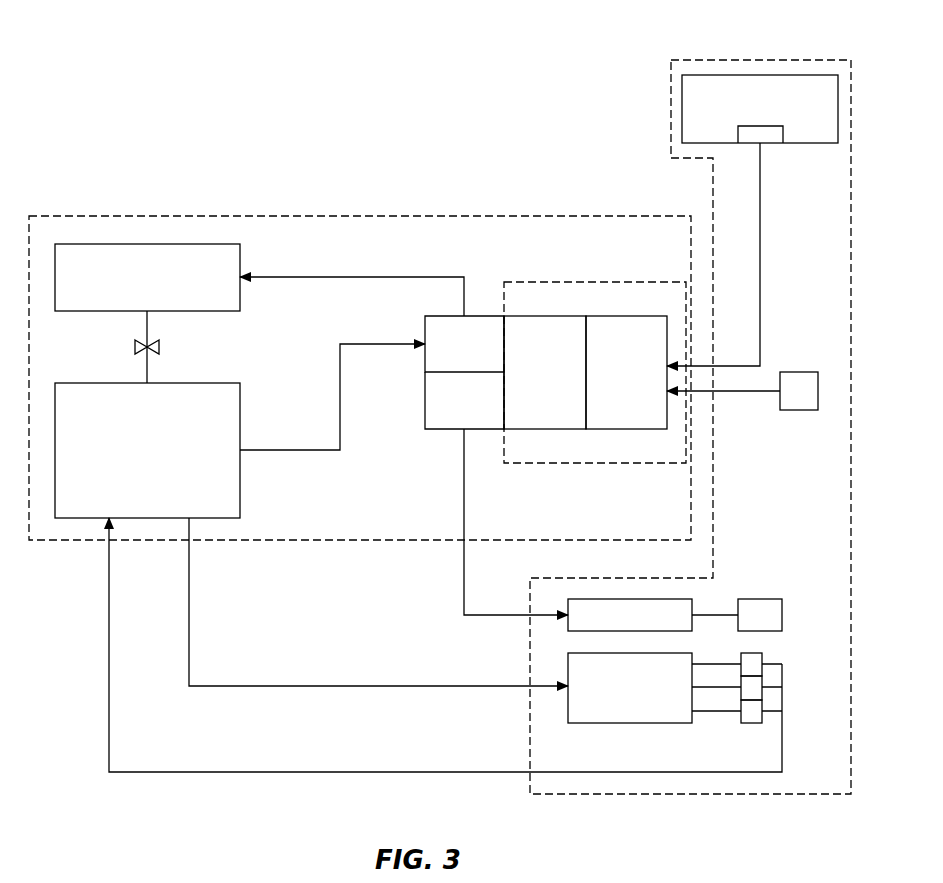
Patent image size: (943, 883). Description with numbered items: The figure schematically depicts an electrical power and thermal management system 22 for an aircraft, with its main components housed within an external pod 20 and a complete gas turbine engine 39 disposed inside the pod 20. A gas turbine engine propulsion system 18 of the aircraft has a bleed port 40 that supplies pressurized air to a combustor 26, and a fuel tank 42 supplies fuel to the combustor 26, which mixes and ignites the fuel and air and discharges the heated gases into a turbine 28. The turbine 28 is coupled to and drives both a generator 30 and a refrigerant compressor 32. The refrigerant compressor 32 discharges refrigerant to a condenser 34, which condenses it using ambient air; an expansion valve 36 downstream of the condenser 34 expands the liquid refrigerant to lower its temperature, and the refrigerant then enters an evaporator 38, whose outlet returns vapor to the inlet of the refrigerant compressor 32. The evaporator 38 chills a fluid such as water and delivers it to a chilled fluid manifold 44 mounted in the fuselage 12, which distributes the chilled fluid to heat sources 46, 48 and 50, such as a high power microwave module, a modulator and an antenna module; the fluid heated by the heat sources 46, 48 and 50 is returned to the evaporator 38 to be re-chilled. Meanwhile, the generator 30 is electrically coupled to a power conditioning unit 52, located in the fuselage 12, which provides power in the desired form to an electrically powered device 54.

The electrical power and thermal management system 22 is at (152, 91).
The external pod 20 is at (360, 216).
The fuselage 12 is at (670, 108).
The gas turbine engine propulsion system 18 is at (762, 75).
The bleed port 40 is at (762, 126).
The fuel tank 42 is at (797, 412).
The condenser 34 is at (98, 311).
The expansion valve 36 is at (162, 347).
The evaporator 38 is at (242, 478).
The gas turbine engine 39 is at (612, 283).
The refrigerant compressor 32 is at (474, 316).
The generator 30 is at (448, 430).
The turbine 28 is at (545, 318).
The combustor 26 is at (628, 318).
The power conditioning unit 52 is at (645, 628).
The electrically powered device 54 is at (758, 599).
The chilled fluid manifold 44 is at (642, 701).
The heat source 46 is at (752, 653).
The heat source 48 is at (764, 692).
The heat source 50 is at (752, 723).